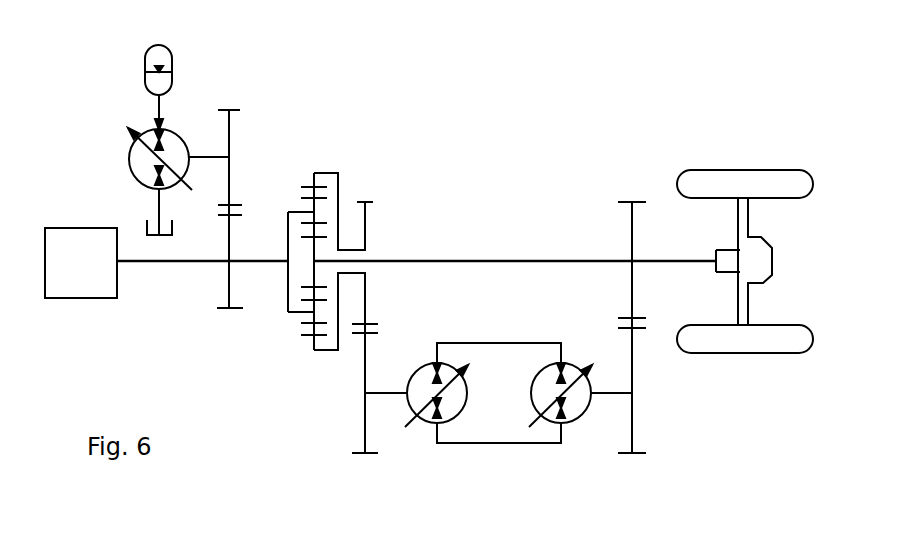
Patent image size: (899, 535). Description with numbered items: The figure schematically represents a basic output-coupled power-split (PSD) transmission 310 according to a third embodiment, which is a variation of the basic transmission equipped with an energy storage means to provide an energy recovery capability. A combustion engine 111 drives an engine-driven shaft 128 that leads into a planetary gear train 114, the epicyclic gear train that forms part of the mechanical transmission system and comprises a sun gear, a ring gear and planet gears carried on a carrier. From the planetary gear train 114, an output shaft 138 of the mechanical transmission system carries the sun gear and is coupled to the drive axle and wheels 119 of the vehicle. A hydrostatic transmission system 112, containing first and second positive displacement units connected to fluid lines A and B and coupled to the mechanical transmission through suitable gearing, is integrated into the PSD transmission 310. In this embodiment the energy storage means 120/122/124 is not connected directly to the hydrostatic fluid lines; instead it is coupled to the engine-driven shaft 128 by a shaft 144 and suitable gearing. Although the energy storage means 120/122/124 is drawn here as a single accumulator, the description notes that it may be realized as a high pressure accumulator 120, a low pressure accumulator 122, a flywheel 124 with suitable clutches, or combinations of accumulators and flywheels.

The basic output-coupled PSD transmission 310 is at (570, 98).
The combustion engine 111 is at (68, 289).
The output shaft 138 is at (560, 260).
The engine-driven shaft 128 is at (200, 263).
The shaft 144 is at (212, 155).
The high pressure accumulator 120 is at (228, 123).
The low pressure accumulator 122 is at (228, 123).
The flywheel 124 is at (257, 40).
The planetary gear train 114 is at (403, 195).
The hydrostatic transmission system 112 is at (458, 477).
The drive axle and wheels 119 is at (802, 247).